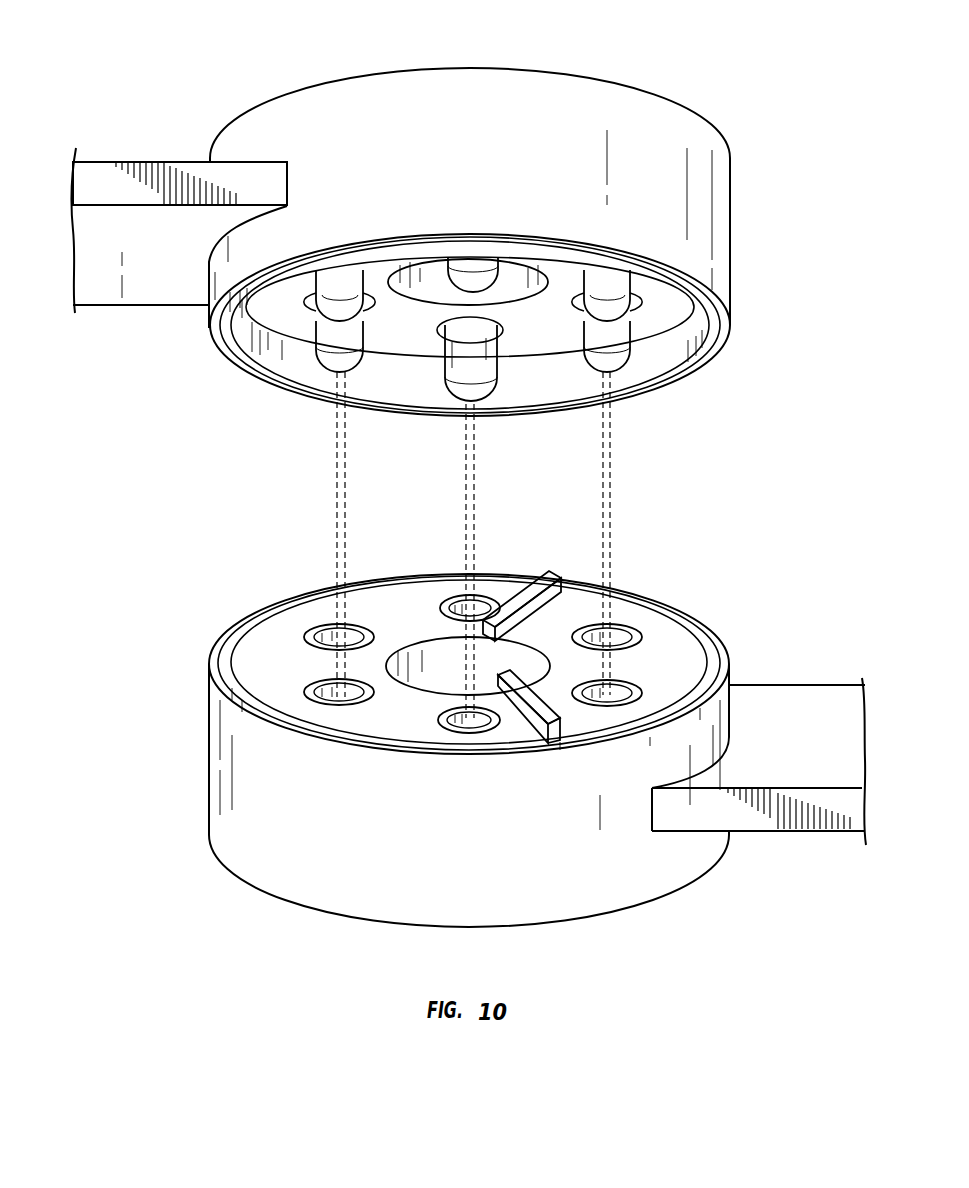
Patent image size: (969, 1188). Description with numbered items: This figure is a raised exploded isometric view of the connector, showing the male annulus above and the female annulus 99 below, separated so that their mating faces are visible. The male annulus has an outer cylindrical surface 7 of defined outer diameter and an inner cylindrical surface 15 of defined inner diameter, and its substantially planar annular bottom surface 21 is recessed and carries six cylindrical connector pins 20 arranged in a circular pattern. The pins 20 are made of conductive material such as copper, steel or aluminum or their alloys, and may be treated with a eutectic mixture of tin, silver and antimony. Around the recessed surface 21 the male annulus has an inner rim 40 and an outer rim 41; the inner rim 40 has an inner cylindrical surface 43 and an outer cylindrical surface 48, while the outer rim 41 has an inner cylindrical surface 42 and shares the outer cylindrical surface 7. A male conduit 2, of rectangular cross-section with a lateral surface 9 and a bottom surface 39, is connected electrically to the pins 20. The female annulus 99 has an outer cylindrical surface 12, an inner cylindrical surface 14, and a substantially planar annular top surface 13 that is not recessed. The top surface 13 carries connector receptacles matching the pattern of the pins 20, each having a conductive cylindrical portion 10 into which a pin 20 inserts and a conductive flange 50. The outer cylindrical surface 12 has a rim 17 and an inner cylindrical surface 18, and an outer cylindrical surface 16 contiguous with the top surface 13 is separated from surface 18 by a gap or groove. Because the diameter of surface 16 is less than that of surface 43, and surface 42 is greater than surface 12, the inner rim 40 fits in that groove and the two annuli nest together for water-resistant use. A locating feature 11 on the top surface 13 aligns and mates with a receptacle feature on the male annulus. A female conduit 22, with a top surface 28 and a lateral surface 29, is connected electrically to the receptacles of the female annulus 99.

The male conduit 2 is at (105, 118).
The outer cylindrical surface 7 is at (520, 92).
The lateral surface 9 is at (146, 195).
The bottom surface 39 is at (125, 283).
The cylindrical portion 10 is at (322, 687).
The locating feature 11 is at (558, 582).
The outer cylindrical surface 12 is at (222, 776).
The planar annular top surface 13 is at (258, 672).
The inner cylindrical surface 14 is at (452, 670).
The inner cylindrical surface 15 is at (424, 288).
The outer cylindrical surface 16 is at (721, 657).
The rim 17 is at (730, 657).
The inner cylindrical surface 18 is at (227, 652).
The cylindrical connector pins 20 is at (337, 355).
The planar annular bottom surface 21 is at (387, 347).
The female conduit 22 is at (807, 670).
The top surface 28 is at (843, 705).
The lateral surface 29 is at (820, 826).
The inner rim 40 is at (678, 368).
The outer rim 41 is at (720, 345).
The inner cylindrical surface 42 is at (713, 327).
The inner cylindrical surface 43 is at (268, 345).
The outer cylindrical surface 48 is at (693, 303).
The flange 50 is at (340, 623).
The female annulus 99 is at (685, 880).